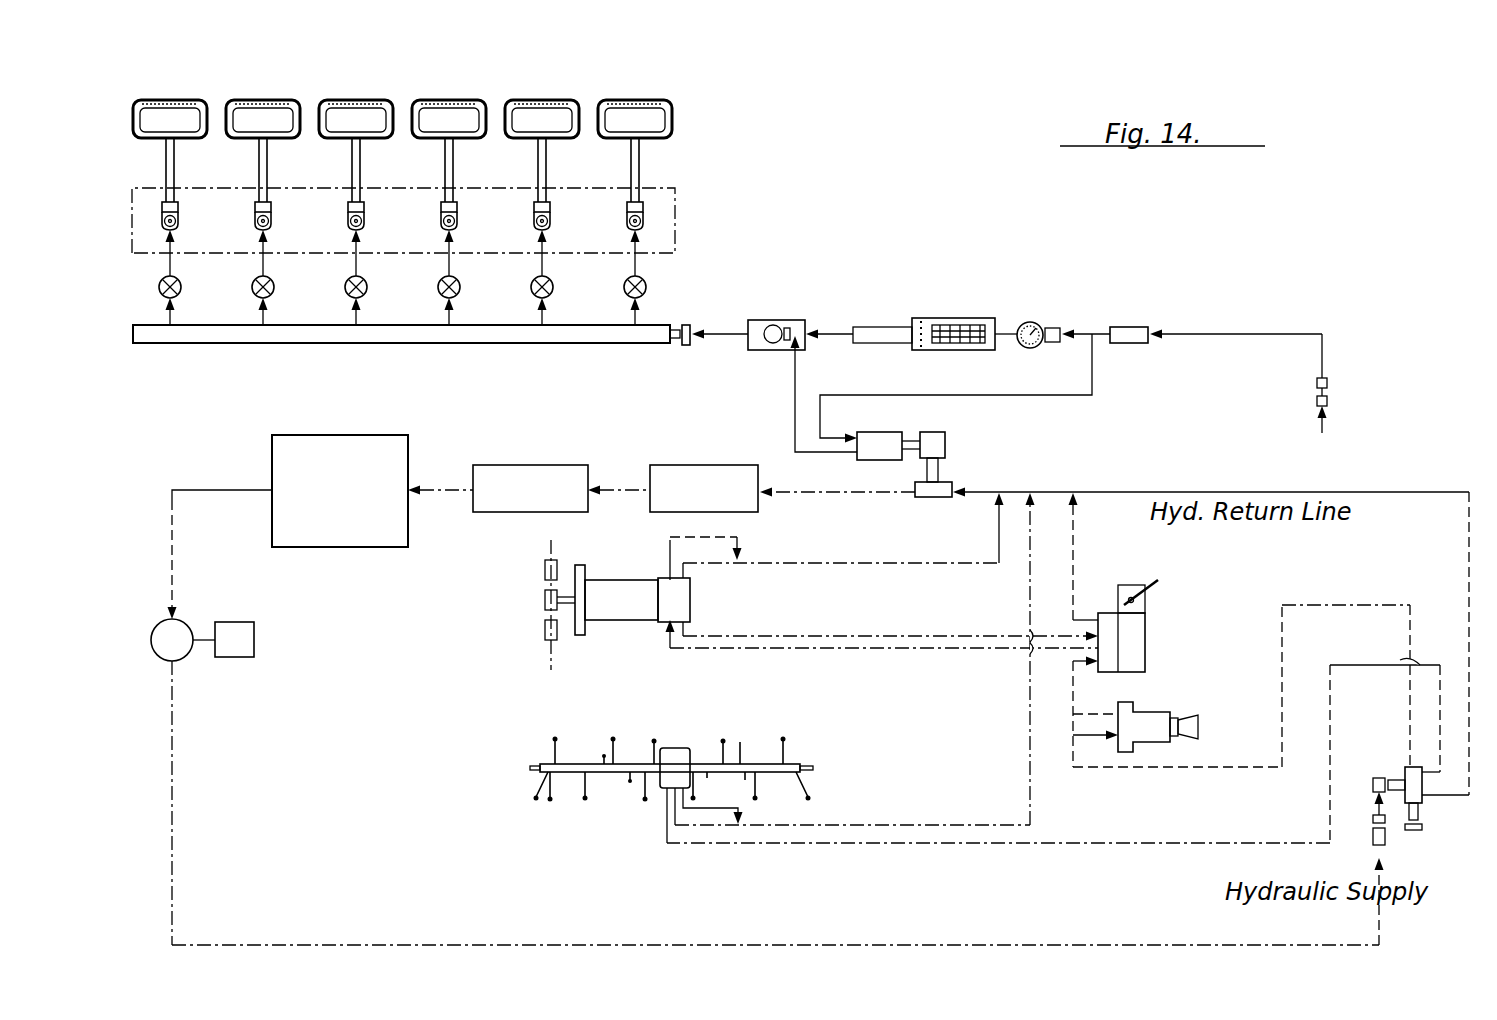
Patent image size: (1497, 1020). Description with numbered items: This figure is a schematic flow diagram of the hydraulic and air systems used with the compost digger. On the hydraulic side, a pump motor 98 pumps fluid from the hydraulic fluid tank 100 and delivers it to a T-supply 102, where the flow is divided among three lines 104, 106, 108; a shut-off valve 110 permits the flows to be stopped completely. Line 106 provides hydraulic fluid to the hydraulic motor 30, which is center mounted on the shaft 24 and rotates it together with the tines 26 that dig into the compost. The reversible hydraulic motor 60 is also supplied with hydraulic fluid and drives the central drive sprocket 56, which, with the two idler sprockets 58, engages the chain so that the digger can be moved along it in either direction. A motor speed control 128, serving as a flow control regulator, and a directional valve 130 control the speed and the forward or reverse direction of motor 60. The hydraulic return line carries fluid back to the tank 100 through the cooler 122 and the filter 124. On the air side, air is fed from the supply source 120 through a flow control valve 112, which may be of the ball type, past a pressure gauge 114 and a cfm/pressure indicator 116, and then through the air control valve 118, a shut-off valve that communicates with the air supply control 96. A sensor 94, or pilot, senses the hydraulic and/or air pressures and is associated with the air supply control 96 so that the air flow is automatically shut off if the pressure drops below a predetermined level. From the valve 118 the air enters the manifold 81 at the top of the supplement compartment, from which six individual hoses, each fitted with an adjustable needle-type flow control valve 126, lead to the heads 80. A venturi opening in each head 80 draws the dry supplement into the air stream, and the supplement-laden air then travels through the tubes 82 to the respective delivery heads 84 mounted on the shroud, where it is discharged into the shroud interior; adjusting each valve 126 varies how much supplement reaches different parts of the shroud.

The delivery head 84 is at (598, 100).
The tube 82 is at (640, 160).
The head 80 is at (646, 212).
The flow control valve 126 is at (732, 294).
The manifold 81 is at (583, 333).
The air control valve 118 is at (808, 294).
The cfm/pressure indicator 116 is at (982, 284).
The pressure gauge 114 is at (1078, 302).
The flow control valve 112 is at (1175, 307).
The air supply source 120 is at (1290, 468).
The air supply control 96 is at (910, 424).
The sensor 94 is at (1005, 434).
The hydraulic fluid tank 100 is at (272, 443).
The filter 124 is at (530, 441).
The cooler 122 is at (708, 444).
The pump motor 98 is at (160, 625).
The hydraulic motor 60 is at (622, 590).
The idler sprocket 58 is at (545, 568).
The central drive sprocket 56 is at (545, 600).
The hydraulic motor 30 is at (672, 760).
The tines 26 is at (738, 748).
The shaft 24 is at (771, 762).
The directional valve 130 is at (1225, 629).
The motor speed control 128 is at (1238, 694).
The line 108 is at (1467, 612).
The line 106 is at (1400, 665).
The line 104 is at (1410, 708).
The T-supply 102 is at (1478, 834).
The shut-off valve 110 is at (1478, 869).